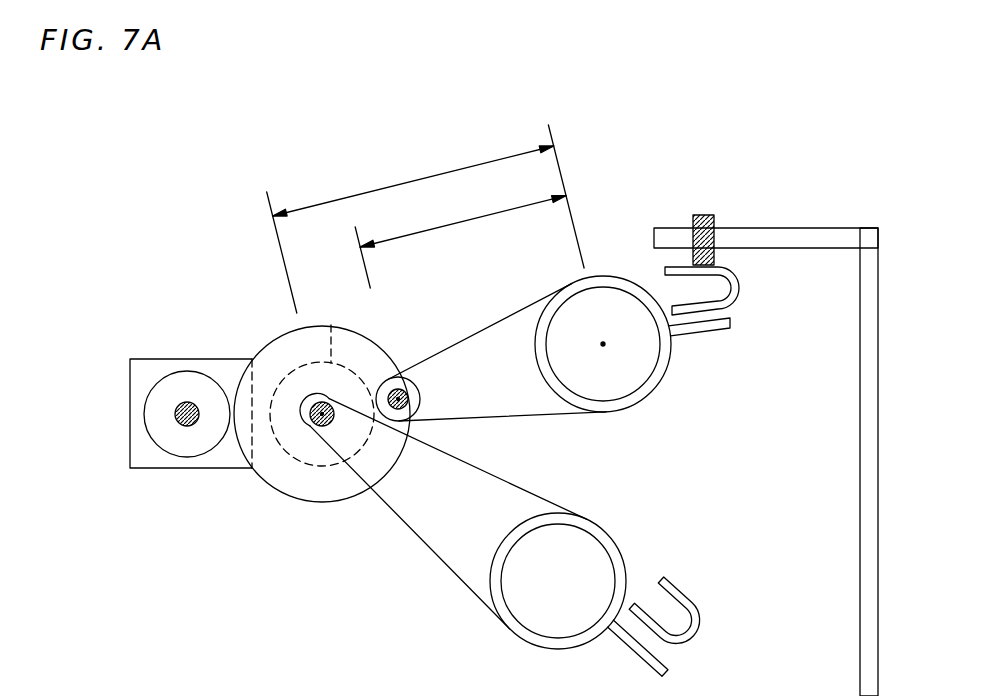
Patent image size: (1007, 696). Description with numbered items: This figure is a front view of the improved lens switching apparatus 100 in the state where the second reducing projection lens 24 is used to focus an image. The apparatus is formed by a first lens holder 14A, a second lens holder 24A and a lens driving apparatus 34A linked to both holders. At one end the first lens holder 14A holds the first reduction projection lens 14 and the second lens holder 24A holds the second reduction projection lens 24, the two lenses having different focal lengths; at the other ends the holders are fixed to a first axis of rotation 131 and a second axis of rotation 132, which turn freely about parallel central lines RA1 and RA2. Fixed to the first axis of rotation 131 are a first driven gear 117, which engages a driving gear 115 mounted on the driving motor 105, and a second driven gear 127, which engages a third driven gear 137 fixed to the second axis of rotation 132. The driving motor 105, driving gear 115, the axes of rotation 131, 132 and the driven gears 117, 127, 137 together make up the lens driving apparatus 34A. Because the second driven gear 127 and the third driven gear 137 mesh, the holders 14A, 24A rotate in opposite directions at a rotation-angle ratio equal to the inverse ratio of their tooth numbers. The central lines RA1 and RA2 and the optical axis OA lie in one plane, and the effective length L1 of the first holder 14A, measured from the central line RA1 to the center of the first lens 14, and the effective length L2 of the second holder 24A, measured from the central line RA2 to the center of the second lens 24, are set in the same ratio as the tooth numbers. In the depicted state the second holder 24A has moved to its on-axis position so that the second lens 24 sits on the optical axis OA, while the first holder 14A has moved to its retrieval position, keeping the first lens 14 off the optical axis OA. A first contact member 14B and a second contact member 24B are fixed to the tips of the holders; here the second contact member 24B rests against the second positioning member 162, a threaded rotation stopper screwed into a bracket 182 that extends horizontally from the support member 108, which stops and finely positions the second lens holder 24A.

The lens switching apparatus 100 is at (874, 137).
The bracket 182 is at (795, 228).
The support member 108 is at (858, 548).
The second positioning member 162 is at (711, 214).
The second reduction projection lens 24 is at (615, 385).
The second lens holder 24A is at (528, 403).
The second contact member 24B is at (738, 296).
The optical axis OA is at (604, 343).
The third driven gear 137 is at (447, 420).
The second axis of rotation 132 is at (401, 379).
The central line of first axis of rotation RA1 is at (317, 403).
The central line of second axis of rotation RA2 is at (402, 422).
The lens driving apparatus 34A is at (270, 447).
The driving motor 105 is at (168, 358).
The driving gear 115 is at (173, 443).
The first driven gear 117 is at (343, 503).
The second driven gear 127 is at (331, 324).
The first axis of rotation 131 is at (320, 427).
The first reduction projection lens 14 is at (597, 568).
The first lens holder 14A is at (437, 548).
The first contact member 14B is at (698, 612).
The effective length of first holder L1 is at (425, 219).
The effective length of second holder L2 is at (460, 241).